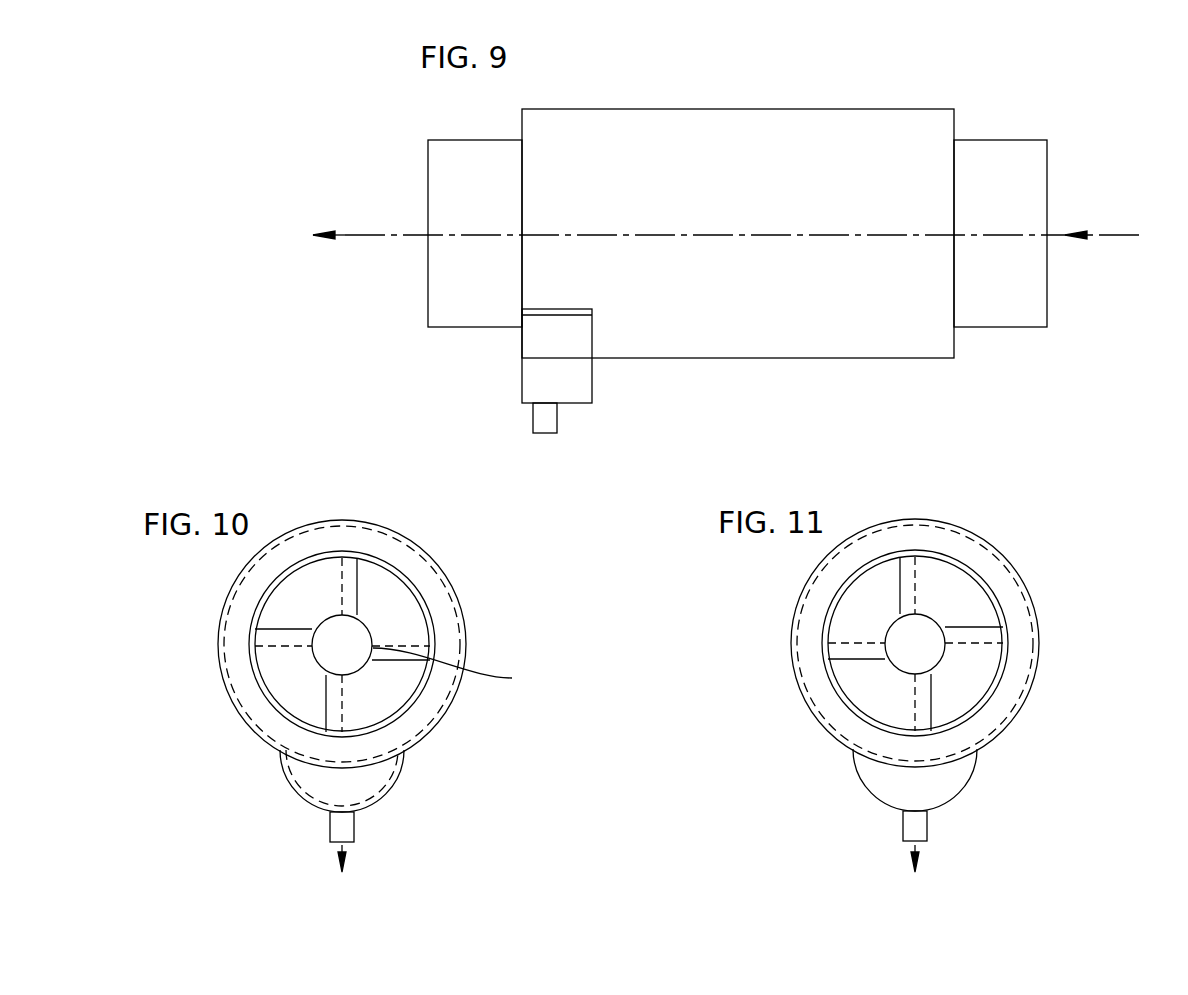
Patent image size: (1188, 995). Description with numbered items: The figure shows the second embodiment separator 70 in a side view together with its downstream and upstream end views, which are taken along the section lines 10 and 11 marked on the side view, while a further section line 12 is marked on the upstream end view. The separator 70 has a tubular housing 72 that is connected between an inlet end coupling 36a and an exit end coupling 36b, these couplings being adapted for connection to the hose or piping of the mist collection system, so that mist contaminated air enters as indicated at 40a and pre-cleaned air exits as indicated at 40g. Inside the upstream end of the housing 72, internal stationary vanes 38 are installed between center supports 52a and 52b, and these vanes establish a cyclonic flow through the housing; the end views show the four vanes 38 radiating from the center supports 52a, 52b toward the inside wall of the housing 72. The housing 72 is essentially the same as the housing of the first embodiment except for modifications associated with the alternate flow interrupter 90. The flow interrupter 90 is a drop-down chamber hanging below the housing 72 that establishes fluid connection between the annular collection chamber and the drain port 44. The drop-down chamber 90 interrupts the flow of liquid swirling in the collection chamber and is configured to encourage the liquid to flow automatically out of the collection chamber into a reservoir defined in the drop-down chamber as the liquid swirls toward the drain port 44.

In FIG. 9, the section line 10- 10 is at (289, 435).
In FIG. 9, the section line 11- 11 is at (1177, 435).
In FIG. 11, the mist collection system 12 is at (915, 520).
In FIG. 9, the inlet end coupling 36a is at (1003, 138).
In FIG. 11, the inlet end coupling 36a is at (1013, 633).
In FIG. 9, the exit end coupling 36b is at (462, 330).
In FIG. 10, the exit end coupling 36b is at (398, 717).
In FIG. 10, the internal stationary vanes 38 is at (283, 603).
In FIG. 11, the internal stationary vanes 38 is at (856, 602).
In FIG. 9, the mist contaminated air entry 40a is at (1125, 232).
In FIG. 9, the pre-cleaned air exit 40g is at (350, 232).
In FIG. 9, the drain port 44 is at (551, 417).
In FIG. 10, the drain port 44 is at (328, 817).
In FIG. 11, the drain port 44 is at (903, 817).
In FIG. 11, the center support 52a is at (950, 645).
In FIG. 10, the center support 52b is at (373, 637).
In FIG. 9, the separator 70 is at (783, 103).
In FIG. 10, the separator 70 is at (232, 742).
In FIG. 11, the separator 70 is at (806, 742).
In FIG. 9, the tubular housing 72 is at (644, 108).
In FIG. 10, the tubular housing 72 is at (410, 543).
In FIG. 11, the tubular housing 72 is at (975, 532).
In FIG. 9, the flow interrupter 90 is at (587, 373).
In FIG. 10, the flow interrupter 90 is at (392, 787).
In FIG. 11, the flow interrupter 90 is at (966, 787).